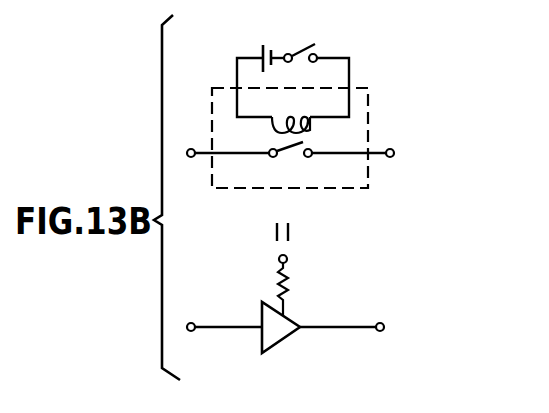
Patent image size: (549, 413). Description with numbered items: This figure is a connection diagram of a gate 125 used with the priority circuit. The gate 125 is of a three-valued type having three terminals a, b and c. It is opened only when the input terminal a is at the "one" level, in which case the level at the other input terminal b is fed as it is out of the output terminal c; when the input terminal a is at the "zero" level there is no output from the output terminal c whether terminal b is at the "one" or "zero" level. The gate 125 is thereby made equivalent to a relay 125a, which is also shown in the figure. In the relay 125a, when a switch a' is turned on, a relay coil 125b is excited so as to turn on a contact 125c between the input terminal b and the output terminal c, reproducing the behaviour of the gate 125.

The gate 125 is at (291, 314).
The relay 125a is at (367, 88).
The relay coil 125b is at (312, 125).
The relay contact switch 125c is at (292, 157).